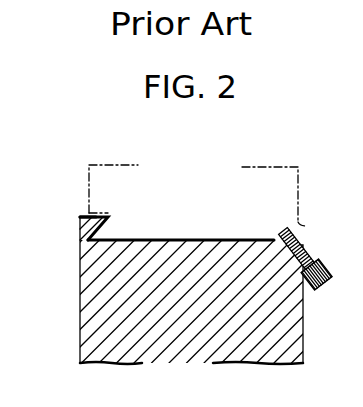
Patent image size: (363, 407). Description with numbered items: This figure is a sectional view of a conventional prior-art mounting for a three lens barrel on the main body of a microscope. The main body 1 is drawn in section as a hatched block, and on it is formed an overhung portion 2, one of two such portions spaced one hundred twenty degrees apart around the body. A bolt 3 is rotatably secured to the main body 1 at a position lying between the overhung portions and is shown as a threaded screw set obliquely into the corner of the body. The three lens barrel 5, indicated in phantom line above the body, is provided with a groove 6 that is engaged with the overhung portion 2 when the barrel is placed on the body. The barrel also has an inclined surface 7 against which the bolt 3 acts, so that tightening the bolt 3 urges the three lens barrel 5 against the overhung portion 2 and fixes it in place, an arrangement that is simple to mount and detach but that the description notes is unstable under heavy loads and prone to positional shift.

The main body 1 is at (84, 315).
The overhung portion 2 is at (88, 229).
The bolt 3 is at (308, 262).
The three lens barrel 5 is at (88, 178).
The groove 6 is at (82, 212).
The inclined surface 7 is at (306, 226).